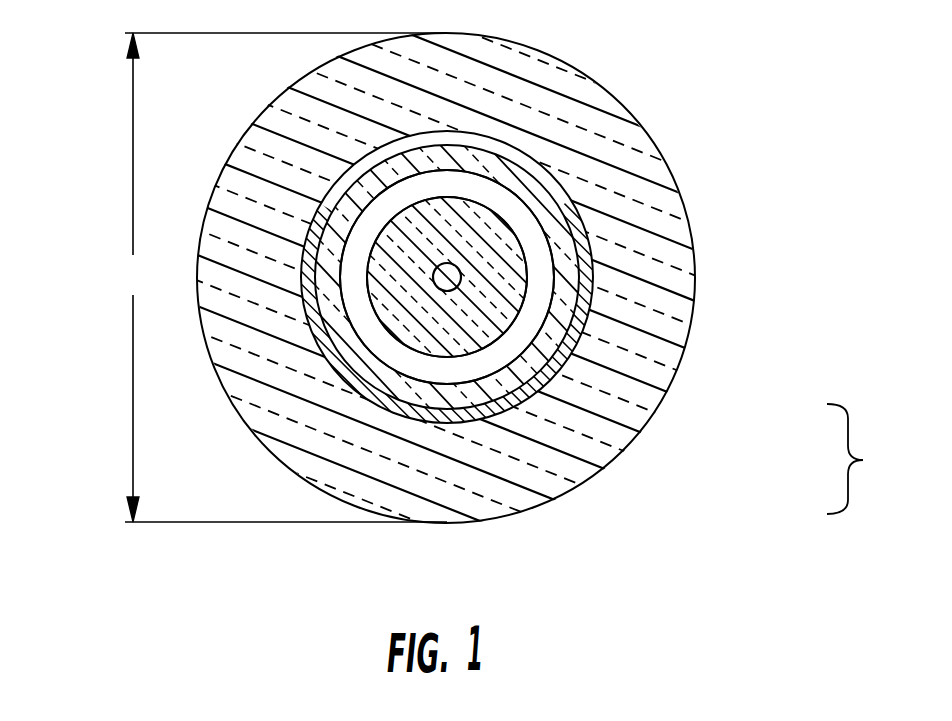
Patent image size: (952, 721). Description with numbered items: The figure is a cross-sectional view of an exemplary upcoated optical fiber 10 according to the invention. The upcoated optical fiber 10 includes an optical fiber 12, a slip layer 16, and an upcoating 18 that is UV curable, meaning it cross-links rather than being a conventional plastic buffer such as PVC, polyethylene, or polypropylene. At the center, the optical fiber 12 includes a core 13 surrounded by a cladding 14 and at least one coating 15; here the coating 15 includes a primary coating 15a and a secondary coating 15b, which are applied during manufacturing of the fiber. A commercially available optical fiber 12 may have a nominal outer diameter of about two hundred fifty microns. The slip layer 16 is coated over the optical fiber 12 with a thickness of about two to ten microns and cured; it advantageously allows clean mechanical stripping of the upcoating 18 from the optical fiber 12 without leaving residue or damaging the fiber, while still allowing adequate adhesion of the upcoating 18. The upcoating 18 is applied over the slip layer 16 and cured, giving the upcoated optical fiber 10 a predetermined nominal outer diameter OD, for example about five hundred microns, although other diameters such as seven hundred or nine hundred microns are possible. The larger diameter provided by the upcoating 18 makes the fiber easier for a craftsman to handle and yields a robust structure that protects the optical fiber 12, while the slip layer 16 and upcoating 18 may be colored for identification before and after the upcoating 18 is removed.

The upcoated optical fiber 10 is at (112, 136).
The optical fiber 12 is at (528, 209).
The core 13 is at (461, 285).
The cladding 14 is at (503, 252).
The coating 15 is at (865, 459).
The primary coating 15a is at (495, 368).
The secondary coating 15b is at (520, 373).
The slip layer 16 is at (330, 379).
The upcoating 18 is at (222, 300).